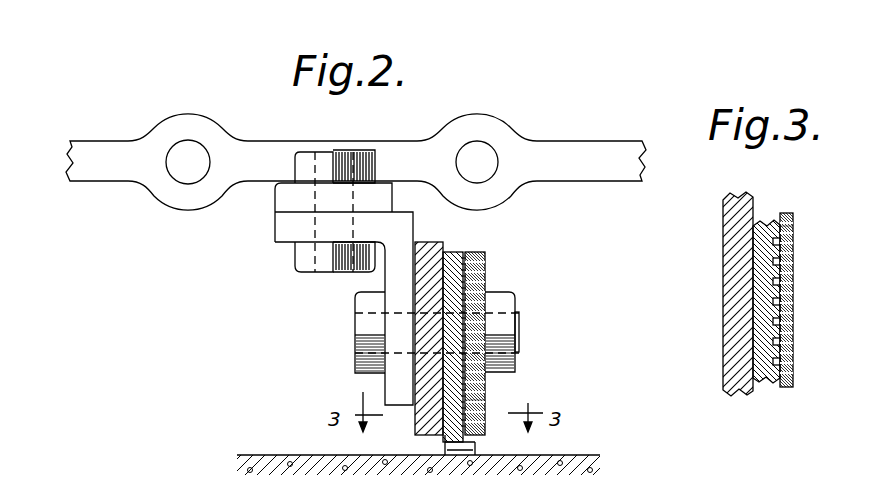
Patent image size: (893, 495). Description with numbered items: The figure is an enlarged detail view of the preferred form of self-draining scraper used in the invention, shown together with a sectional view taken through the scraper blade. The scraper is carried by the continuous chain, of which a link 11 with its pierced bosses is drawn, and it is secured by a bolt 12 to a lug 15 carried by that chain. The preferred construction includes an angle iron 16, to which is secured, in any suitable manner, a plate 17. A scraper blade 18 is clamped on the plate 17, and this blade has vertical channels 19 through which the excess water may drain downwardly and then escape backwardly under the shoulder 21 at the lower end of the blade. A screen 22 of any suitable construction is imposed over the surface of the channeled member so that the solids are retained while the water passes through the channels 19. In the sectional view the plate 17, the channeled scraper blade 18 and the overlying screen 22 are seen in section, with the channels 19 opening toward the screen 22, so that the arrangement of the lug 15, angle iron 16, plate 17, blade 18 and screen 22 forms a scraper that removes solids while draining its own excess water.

In FIG. 2, the chain link 11 is at (583, 143).
In FIG. 2, the bolt with nuts 12 is at (316, 262).
In FIG. 2, the lug 15 is at (285, 199).
In FIG. 2, the angle iron 16 is at (413, 223).
In FIG. 2, the plate 17 is at (447, 242).
In FIG. 3, the plate 17 is at (730, 330).
In FIG. 2, the scraper blade 18 is at (463, 252).
In FIG. 3, the scraper blade 18 is at (765, 382).
In FIG. 2, the vertical channels 19 is at (473, 283).
In FIG. 3, the vertical channels 19 is at (773, 222).
In FIG. 2, the shoulder 21 is at (446, 437).
In FIG. 2, the screen 22 is at (489, 402).
In FIG. 3, the screen 22 is at (795, 226).